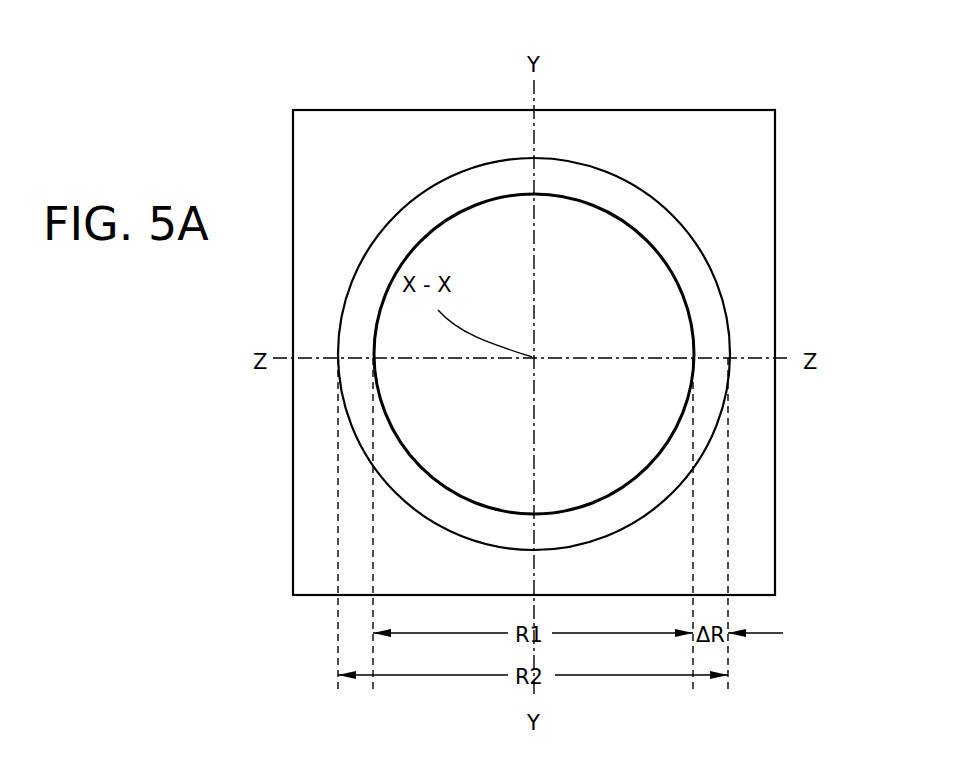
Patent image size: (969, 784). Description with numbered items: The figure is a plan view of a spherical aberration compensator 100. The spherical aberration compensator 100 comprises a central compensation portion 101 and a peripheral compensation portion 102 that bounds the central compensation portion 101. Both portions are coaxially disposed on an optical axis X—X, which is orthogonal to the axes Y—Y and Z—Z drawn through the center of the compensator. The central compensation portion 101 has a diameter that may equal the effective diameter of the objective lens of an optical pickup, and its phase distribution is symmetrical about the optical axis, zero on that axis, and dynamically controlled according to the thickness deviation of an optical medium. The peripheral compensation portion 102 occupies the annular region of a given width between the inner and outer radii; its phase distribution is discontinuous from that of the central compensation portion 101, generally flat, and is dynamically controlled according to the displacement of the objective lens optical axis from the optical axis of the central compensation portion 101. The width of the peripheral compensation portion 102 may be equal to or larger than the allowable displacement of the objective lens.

The spherical aberration compensator 100 is at (756, 86).
The central compensation portion 101 is at (621, 306).
The peripheral compensation portion 102 is at (716, 314).